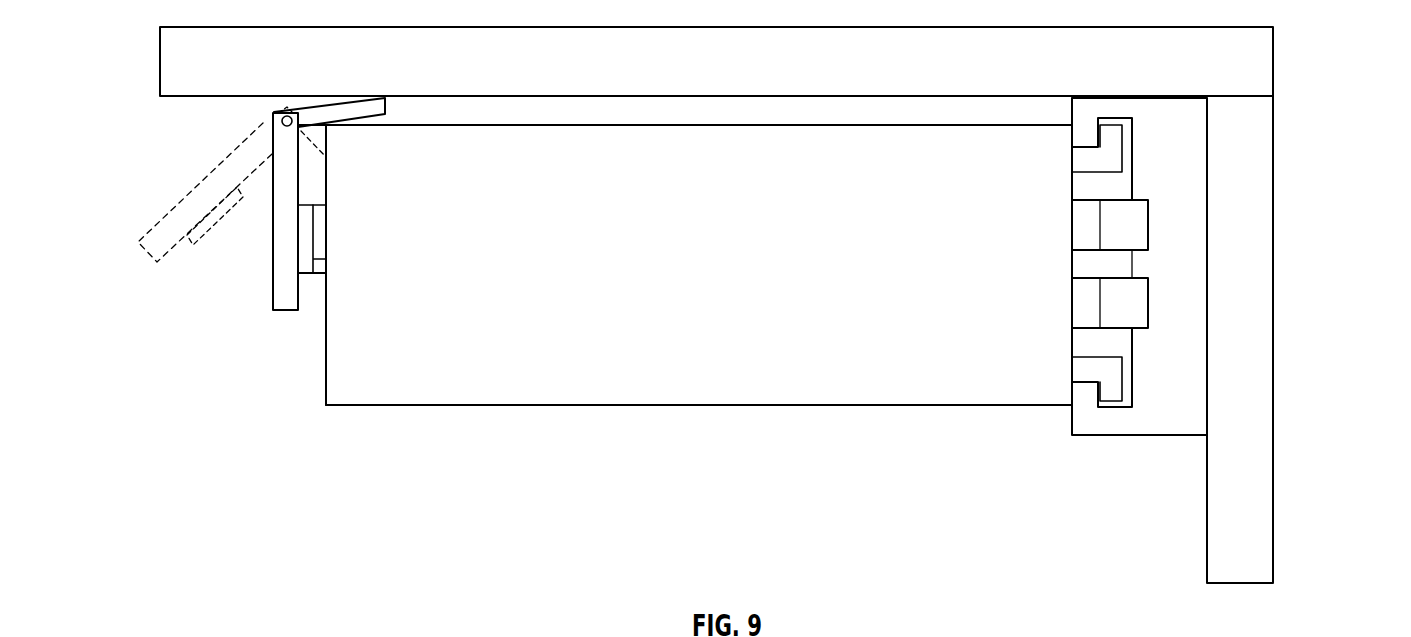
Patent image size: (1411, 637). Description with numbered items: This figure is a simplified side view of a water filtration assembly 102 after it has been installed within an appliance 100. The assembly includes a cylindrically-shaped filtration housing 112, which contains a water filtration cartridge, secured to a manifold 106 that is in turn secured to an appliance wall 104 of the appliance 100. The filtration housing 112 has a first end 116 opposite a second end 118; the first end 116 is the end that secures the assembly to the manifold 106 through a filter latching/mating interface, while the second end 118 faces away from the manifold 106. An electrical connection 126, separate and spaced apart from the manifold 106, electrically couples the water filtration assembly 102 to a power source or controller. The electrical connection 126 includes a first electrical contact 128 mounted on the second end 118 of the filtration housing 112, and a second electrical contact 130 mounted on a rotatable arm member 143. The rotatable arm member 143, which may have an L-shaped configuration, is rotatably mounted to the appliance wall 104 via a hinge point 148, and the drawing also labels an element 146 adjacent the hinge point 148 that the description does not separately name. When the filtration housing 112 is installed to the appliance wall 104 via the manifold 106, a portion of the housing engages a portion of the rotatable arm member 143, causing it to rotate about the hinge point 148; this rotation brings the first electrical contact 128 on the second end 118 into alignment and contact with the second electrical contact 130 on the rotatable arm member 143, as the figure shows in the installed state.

The appliance 100 is at (1280, 47).
The water filtration assembly 102 is at (618, 309).
The appliance wall 104 is at (1273, 548).
The manifold 106 is at (1214, 266).
The filtration housing 112 is at (618, 269).
The first end 116 is at (1140, 406).
The second end 118 is at (618, 395).
The electrical connection 126 is at (284, 249).
The first electrical contact 128 is at (318, 259).
The second electrical contact 130 is at (216, 211).
The rotatable arm member 143 is at (258, 165).
The arm 146 is at (293, 102).
The hinge point 148 is at (273, 121).